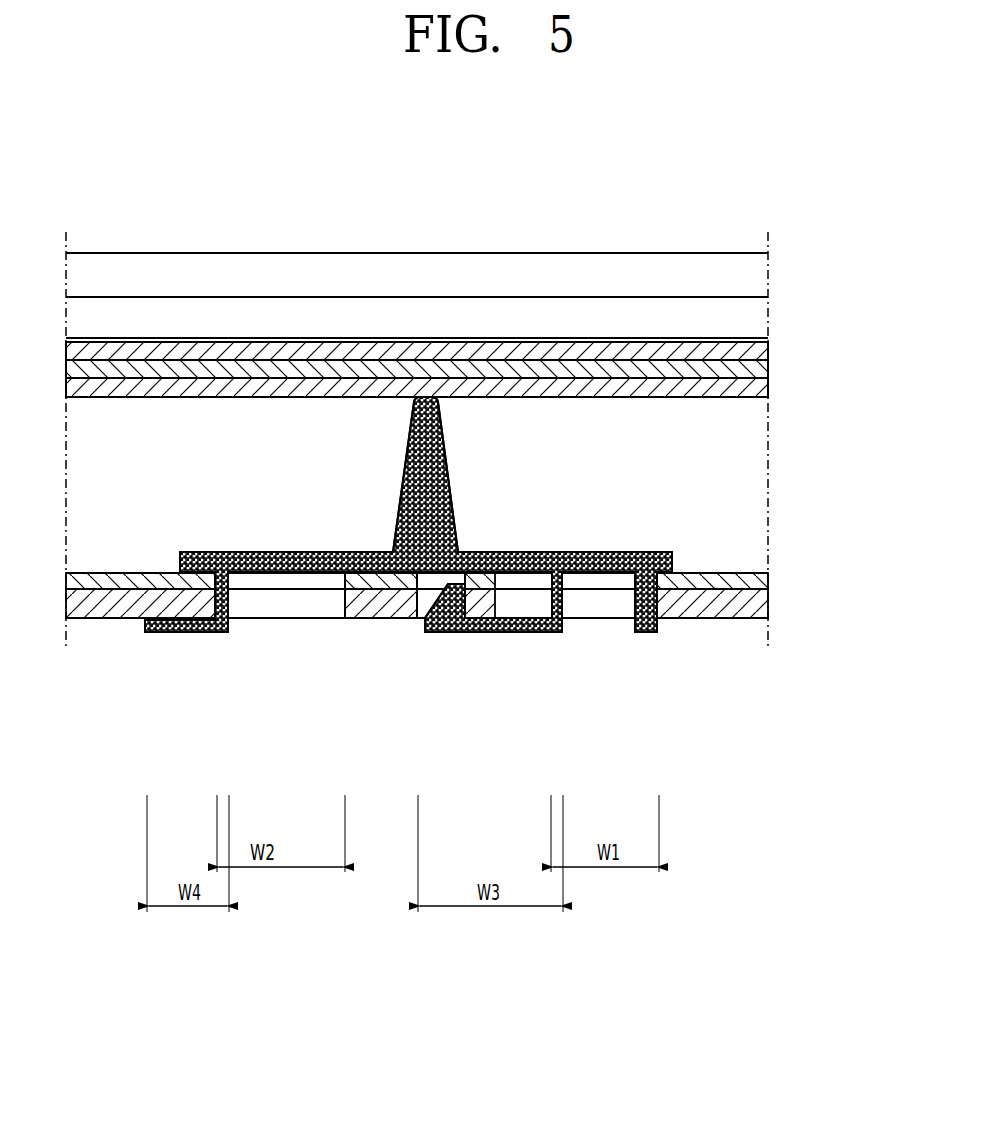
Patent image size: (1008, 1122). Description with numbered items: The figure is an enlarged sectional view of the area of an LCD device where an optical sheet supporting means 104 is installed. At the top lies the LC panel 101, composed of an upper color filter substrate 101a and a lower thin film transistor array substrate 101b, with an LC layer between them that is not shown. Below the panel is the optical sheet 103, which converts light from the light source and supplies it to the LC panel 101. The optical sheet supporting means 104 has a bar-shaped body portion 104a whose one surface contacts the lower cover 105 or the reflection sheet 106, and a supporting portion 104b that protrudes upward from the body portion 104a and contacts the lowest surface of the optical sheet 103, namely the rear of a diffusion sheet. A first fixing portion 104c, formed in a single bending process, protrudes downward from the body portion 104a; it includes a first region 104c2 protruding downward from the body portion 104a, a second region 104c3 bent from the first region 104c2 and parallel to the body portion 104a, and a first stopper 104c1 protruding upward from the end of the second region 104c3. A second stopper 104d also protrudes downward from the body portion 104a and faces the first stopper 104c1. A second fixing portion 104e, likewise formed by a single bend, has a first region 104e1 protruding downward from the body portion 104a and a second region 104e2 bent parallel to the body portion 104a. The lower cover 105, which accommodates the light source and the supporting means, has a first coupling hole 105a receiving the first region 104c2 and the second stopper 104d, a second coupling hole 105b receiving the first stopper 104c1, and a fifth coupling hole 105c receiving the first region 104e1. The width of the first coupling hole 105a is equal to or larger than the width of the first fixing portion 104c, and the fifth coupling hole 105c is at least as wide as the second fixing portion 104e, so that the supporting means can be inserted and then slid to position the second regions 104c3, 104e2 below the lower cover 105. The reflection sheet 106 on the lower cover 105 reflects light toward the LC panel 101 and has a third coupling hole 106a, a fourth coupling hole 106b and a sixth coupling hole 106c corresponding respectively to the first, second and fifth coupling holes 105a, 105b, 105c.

The LC panel 101 is at (493, 295).
The color filter substrate 101a is at (762, 272).
The thin film transistor (TFT) array substrate 101b is at (762, 316).
The optical sheet 103 is at (768, 389).
The optical sheet supporting means 104 is at (438, 572).
The bar-shaped body portion 104a is at (243, 557).
The supporting portion 104b is at (435, 460).
The first fixing portion 104c is at (515, 660).
The first stopper 104c1 is at (455, 615).
The first region 104c2 is at (578, 639).
The second region 104c3 is at (517, 632).
The second stopper 104d is at (645, 632).
The second fixing portion 104e is at (205, 660).
The first region 104e1 is at (222, 602).
The second region 104e2 is at (186, 663).
The lower cover 105 is at (760, 610).
The first coupling hole 105a is at (618, 602).
The second coupling hole 105b is at (428, 605).
The fifth coupling hole 105c is at (277, 608).
The reflection sheet 106 is at (760, 581).
The third coupling hole 106a is at (575, 580).
The fourth coupling hole 106b is at (442, 580).
The sixth coupling hole 106c is at (325, 580).